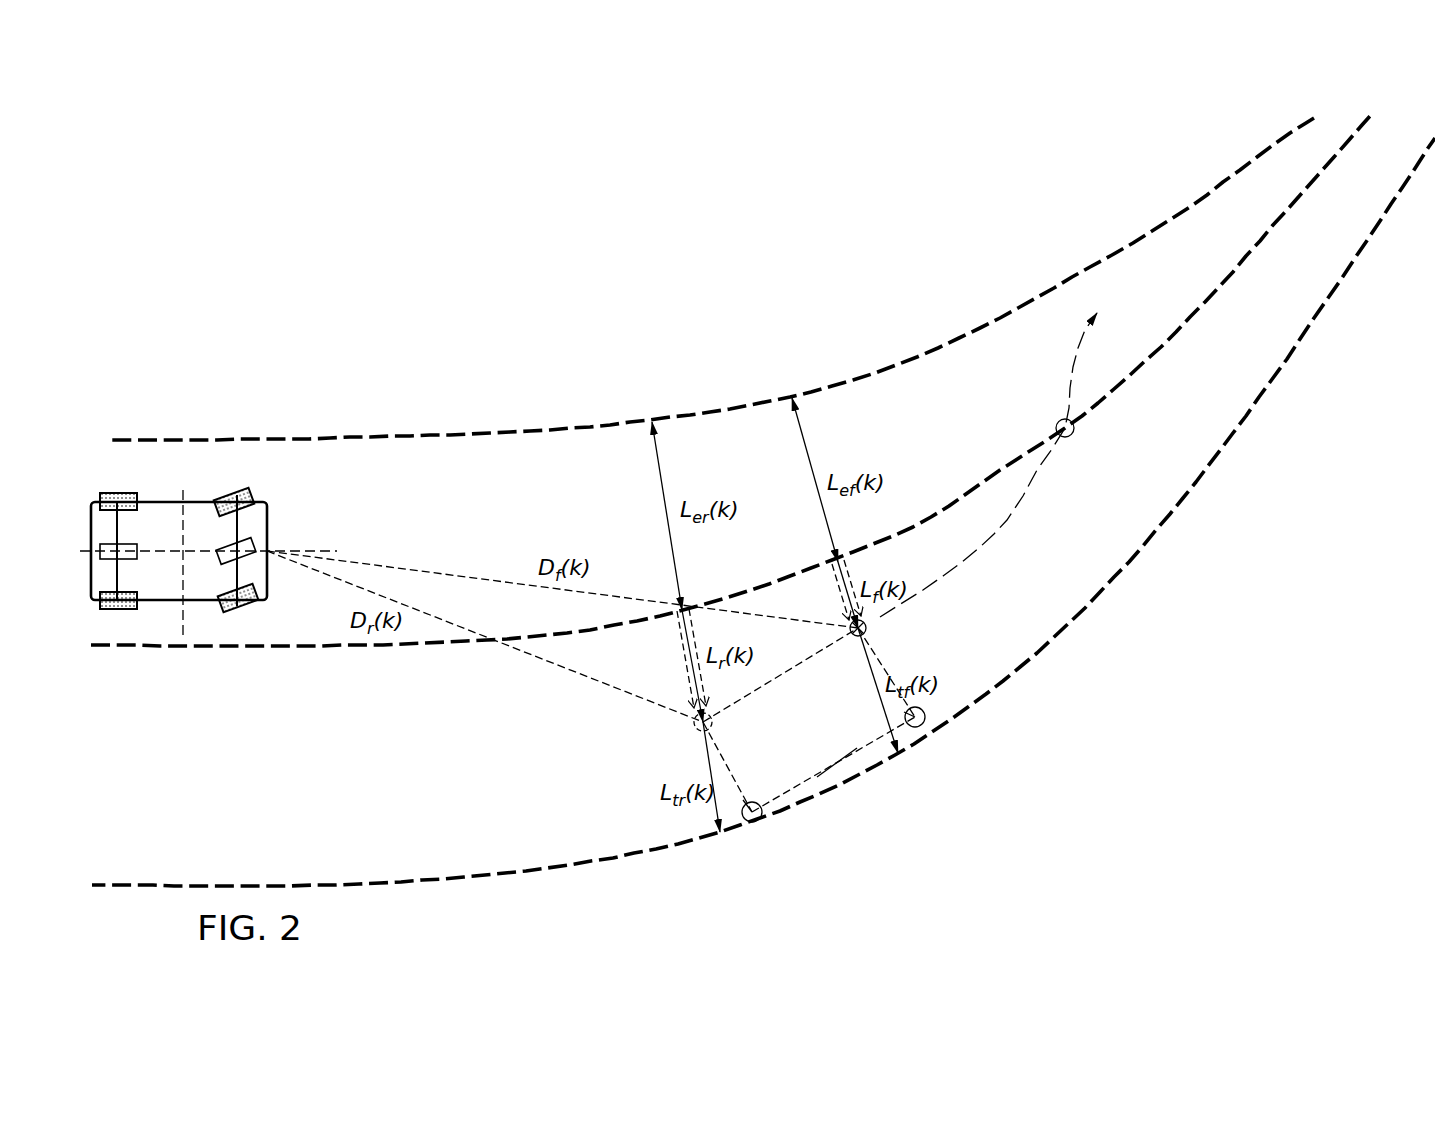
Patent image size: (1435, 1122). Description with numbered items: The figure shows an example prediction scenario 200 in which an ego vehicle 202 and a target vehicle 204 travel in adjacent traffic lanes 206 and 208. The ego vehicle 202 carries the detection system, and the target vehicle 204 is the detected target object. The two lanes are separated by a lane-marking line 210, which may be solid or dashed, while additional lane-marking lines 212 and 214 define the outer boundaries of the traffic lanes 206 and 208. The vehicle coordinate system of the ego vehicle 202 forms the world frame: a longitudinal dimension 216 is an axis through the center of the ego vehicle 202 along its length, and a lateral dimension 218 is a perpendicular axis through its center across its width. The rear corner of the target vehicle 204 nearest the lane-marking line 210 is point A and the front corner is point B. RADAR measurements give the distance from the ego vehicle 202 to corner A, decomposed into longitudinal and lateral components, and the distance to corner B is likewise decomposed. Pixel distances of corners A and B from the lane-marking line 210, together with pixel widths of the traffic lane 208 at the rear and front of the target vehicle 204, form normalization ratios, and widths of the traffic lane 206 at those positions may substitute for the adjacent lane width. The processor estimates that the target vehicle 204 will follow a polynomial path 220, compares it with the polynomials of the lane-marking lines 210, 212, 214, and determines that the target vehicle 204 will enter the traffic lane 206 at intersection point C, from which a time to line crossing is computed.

The driving scenario 200 is at (392, 259).
The ego vehicle 202 is at (205, 606).
The target vehicle 204 is at (838, 770).
The traffic lane 206 is at (1194, 283).
The traffic lane 208 is at (1334, 269).
The lane-marking line 210 is at (1228, 272).
The lane-marking line 212 is at (1097, 264).
The lane-marking line 214 is at (1228, 440).
The longitudinal dimension 216 is at (318, 548).
The lateral dimension 218 is at (181, 616).
The path 220 is at (1007, 518).